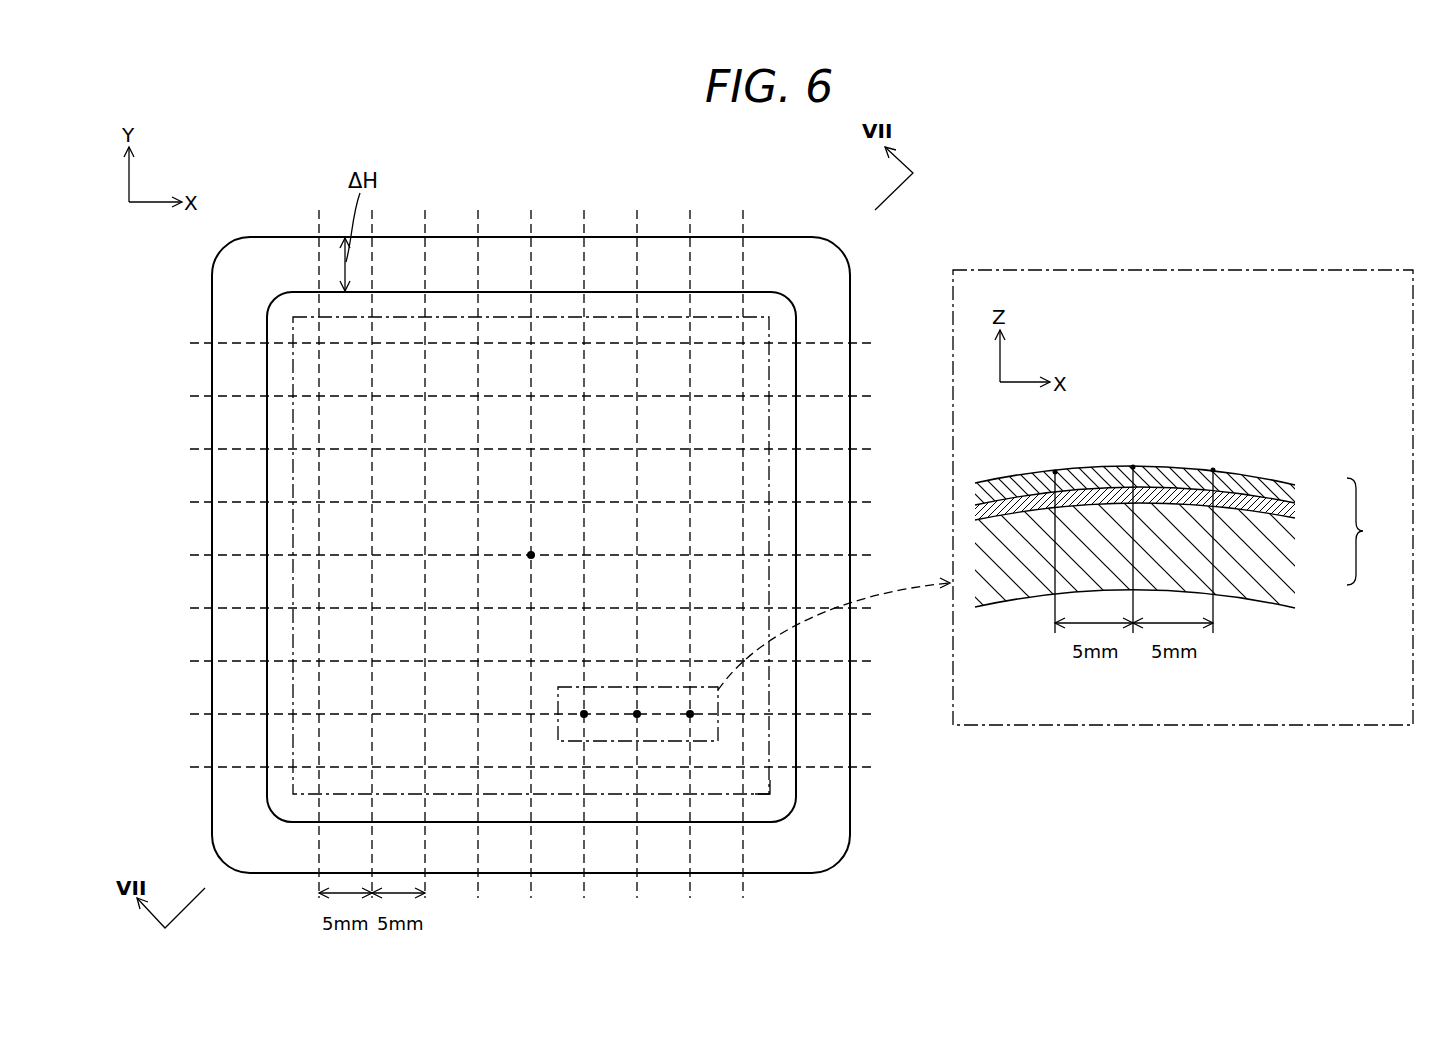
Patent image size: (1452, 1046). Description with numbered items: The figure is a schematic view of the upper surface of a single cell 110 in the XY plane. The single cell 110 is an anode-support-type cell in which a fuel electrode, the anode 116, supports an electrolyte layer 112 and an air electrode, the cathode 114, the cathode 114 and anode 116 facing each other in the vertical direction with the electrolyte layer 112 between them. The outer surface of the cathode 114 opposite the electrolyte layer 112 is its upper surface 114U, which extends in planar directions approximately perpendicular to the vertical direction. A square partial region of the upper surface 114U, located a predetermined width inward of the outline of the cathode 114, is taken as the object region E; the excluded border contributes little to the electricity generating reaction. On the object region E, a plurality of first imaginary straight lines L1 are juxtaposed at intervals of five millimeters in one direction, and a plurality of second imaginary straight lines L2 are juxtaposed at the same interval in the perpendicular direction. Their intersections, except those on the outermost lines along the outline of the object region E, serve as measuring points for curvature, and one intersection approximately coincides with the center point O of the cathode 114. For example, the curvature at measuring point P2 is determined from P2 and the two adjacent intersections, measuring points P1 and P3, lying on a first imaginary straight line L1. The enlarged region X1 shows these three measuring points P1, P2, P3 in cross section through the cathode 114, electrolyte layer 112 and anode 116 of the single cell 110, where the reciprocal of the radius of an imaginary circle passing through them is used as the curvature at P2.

The single cell 110 is at (775, 232).
The electrolyte layer 112 is at (276, 256).
The air electrode (cathode) 114 is at (792, 316).
The upper surface of the cathode 114U is at (785, 797).
The fuel electrode (anode) 116 is at (1281, 560).
The object region E is at (505, 316).
The first imaginary straight lines L1 is at (868, 345).
The second imaginary straight lines L2 is at (692, 216).
The center point of the cathode O is at (536, 550).
The measuring point P1 is at (584, 718).
The measuring point P2 is at (637, 718).
The measuring point P3 is at (690, 718).
The enlarged region X1 is at (1187, 270).